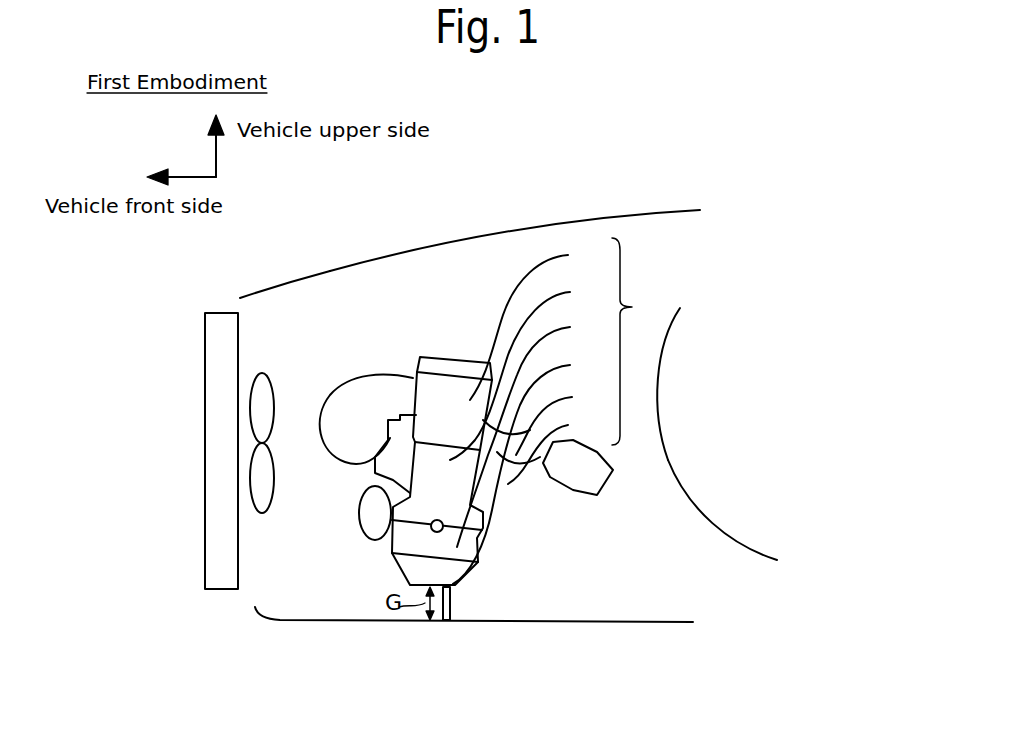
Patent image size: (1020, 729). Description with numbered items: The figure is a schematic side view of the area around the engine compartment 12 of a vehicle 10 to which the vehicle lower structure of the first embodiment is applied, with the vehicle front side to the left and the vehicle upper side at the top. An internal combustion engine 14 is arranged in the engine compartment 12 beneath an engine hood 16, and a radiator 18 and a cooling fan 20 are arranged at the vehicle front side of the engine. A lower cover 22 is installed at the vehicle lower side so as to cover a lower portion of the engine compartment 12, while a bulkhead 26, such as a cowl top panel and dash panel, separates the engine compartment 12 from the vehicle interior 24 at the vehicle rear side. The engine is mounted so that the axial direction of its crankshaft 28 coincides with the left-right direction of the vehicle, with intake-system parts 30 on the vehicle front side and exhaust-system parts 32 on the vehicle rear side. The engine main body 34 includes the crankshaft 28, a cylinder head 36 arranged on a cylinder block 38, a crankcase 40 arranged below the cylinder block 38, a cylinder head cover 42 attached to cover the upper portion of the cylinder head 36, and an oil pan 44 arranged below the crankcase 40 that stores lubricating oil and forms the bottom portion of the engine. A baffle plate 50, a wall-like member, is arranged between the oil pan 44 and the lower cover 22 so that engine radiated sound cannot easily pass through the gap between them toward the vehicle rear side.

The vehicle 10 is at (594, 192).
The engine compartment 12 is at (325, 298).
The internal combustion engine 14 is at (452, 328).
The engine hood 16 is at (433, 242).
The radiator 18 is at (213, 589).
The cooling fan 20 is at (262, 513).
The lower cover 22 is at (568, 622).
The vehicle interior 24 is at (727, 468).
The bulkhead 26 is at (735, 548).
The crankshaft 28 is at (530, 465).
The intake-system parts 30 is at (344, 377).
The exhaust-system parts 32 is at (583, 497).
The engine main body 34 is at (640, 341).
The cylinder head 36 is at (528, 367).
The cylinder block 38 is at (532, 428).
The crankcase 40 is at (561, 416).
The cylinder head cover 42 is at (539, 320).
The oil pan 44 is at (557, 446).
The baffle plate 50 is at (453, 600).